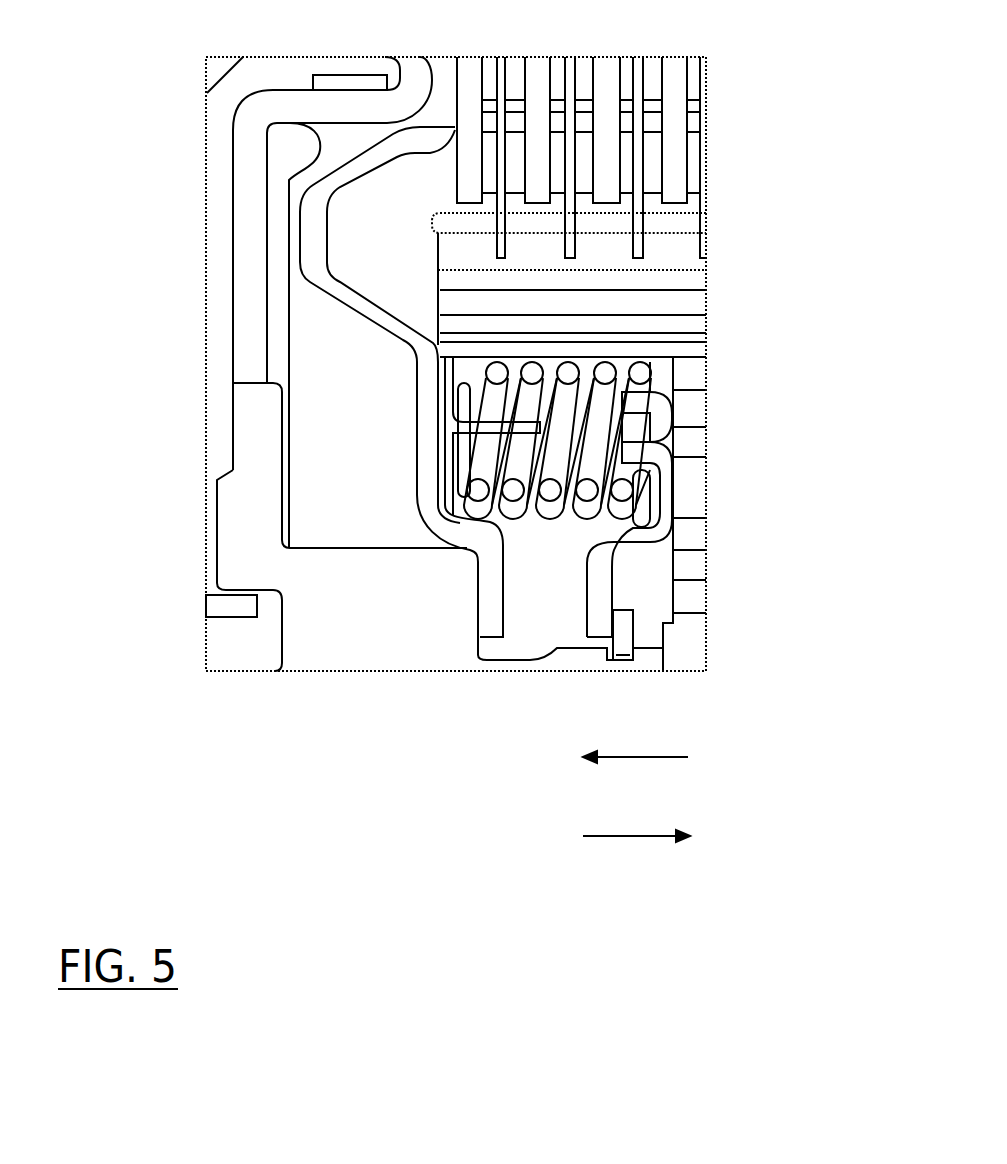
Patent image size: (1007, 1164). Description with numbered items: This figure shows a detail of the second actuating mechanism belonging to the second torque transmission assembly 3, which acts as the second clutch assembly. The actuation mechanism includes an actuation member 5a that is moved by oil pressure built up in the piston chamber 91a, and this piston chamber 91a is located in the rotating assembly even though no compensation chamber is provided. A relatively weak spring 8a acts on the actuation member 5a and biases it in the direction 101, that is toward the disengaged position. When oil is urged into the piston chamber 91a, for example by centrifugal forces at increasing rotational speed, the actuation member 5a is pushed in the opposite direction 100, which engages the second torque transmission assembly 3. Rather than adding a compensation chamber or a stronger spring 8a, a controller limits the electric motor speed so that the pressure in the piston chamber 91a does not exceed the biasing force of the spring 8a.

The second torque transmission assembly 3 is at (449, 459).
The actuation member 5a is at (425, 397).
The spring 8a is at (588, 492).
The piston chamber 91a is at (340, 525).
The direction 100 is at (636, 856).
The direction 101 is at (635, 740).